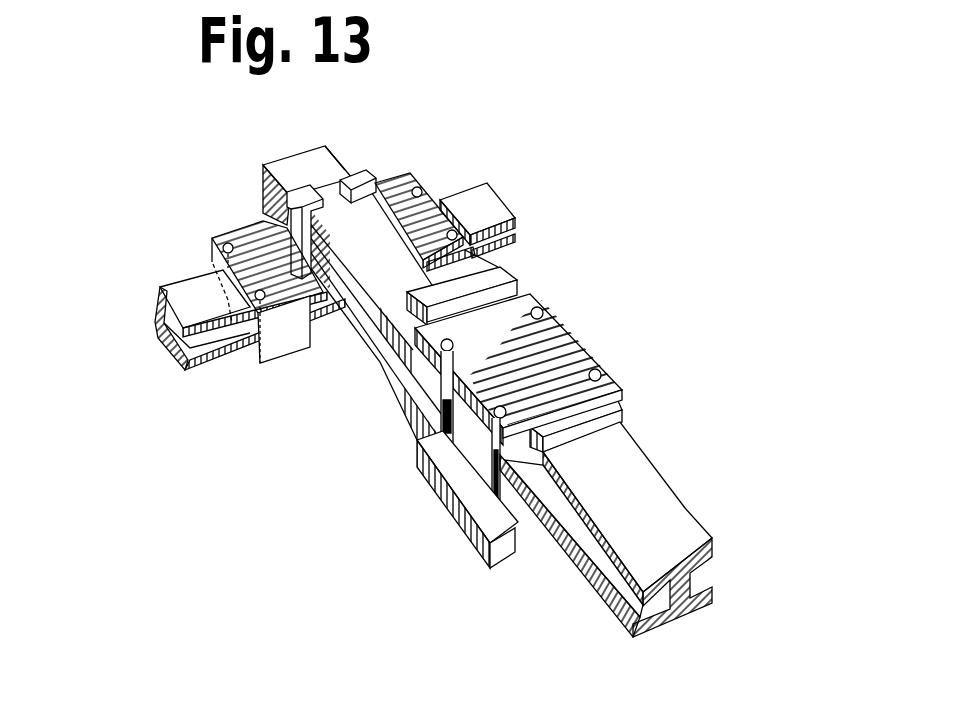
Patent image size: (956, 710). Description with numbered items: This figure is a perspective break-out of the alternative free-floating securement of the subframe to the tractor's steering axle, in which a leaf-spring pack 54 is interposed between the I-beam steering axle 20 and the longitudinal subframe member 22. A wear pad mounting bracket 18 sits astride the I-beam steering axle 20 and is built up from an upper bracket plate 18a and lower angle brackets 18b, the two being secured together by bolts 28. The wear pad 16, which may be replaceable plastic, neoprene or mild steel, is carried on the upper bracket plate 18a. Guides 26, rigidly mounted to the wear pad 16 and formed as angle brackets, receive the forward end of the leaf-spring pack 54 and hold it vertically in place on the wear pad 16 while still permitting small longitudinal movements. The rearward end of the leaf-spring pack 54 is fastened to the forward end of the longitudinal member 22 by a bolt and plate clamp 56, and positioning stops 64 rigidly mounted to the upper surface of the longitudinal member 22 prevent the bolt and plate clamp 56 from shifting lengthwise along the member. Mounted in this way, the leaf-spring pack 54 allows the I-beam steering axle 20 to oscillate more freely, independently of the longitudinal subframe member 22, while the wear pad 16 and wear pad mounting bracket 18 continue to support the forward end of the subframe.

The wear pad 16 is at (262, 220).
The wear pad mounting bracket 18 is at (312, 280).
The upper bracket plate 18a is at (341, 273).
The lower angle brackets 18b is at (273, 342).
The I-beam steering axle 20 is at (192, 308).
The longitudinal member 22 is at (497, 274).
The guide 26 is at (262, 219).
The bolts 28 is at (220, 260).
The leaf-spring pack 54 is at (300, 152).
The bolt and plate clamp 56 is at (545, 340).
The positioning stops 64 is at (487, 288).